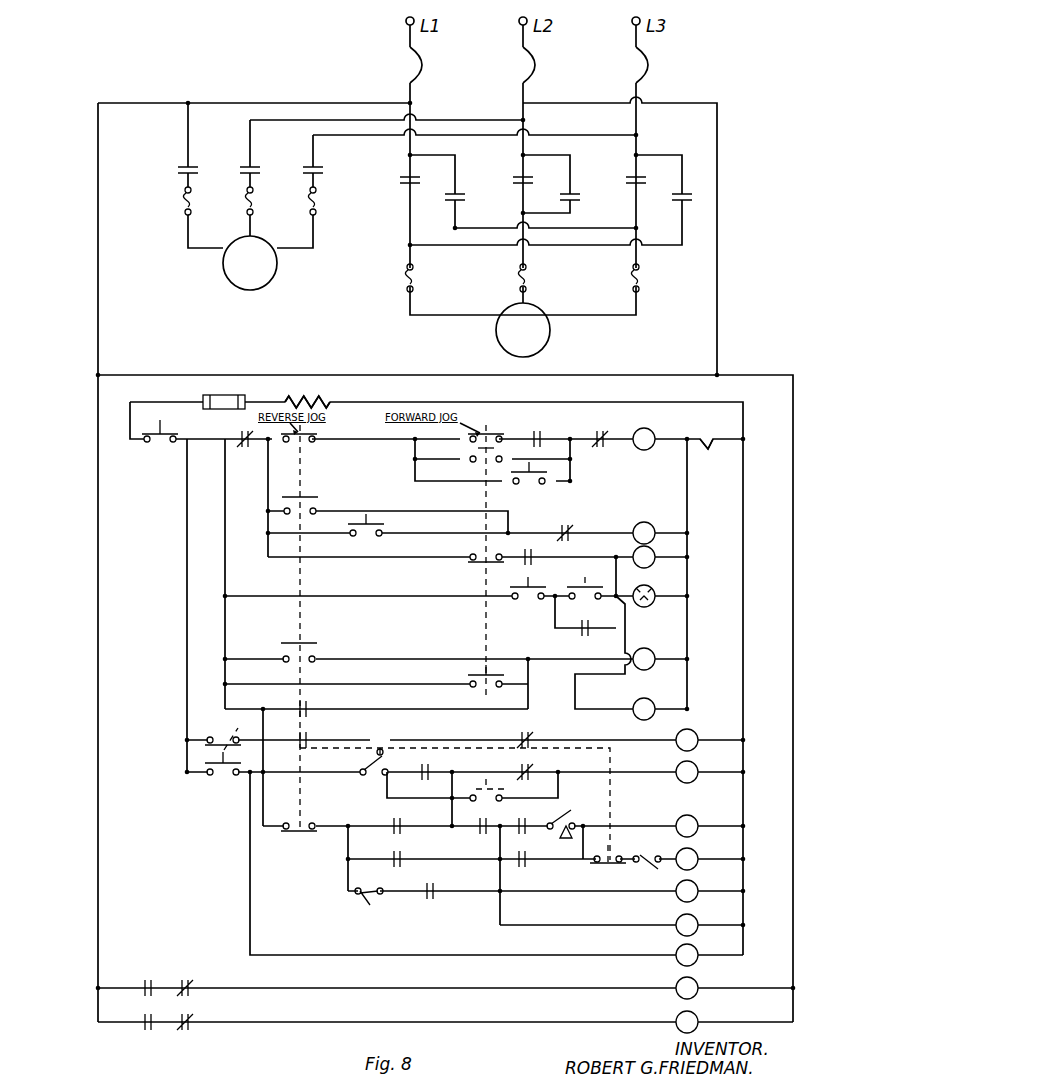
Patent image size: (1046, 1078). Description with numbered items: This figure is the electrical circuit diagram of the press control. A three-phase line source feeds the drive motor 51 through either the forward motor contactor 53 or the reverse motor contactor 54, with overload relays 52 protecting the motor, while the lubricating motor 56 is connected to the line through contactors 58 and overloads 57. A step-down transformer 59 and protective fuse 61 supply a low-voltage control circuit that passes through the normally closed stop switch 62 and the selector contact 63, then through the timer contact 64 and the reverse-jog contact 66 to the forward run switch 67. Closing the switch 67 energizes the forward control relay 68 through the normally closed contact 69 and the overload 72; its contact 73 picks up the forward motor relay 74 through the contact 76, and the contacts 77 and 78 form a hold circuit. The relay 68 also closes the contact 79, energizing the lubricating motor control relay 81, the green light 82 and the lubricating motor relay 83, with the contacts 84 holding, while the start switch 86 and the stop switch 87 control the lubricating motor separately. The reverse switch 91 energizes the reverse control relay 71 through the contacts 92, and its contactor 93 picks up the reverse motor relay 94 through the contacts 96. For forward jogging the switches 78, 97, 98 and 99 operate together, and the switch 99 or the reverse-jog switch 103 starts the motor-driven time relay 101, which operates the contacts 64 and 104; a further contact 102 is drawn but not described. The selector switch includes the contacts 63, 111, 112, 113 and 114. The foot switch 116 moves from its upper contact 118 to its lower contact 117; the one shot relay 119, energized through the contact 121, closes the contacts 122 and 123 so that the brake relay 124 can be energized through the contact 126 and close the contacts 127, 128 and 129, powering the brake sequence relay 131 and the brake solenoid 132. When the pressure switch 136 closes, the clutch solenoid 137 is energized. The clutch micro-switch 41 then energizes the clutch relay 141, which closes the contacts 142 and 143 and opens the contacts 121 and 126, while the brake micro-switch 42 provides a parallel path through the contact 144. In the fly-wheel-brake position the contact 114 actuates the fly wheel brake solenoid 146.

The clutch micro-switch 41 is at (644, 859).
The brake micro-switch 42 is at (376, 870).
The drive motor 51 is at (550, 332).
The overload relays 52 is at (405, 278).
The motor contactor for forward drive 53 is at (400, 182).
The motor contactor for reverse drive 54 is at (462, 190).
The lubricating motor 56 is at (268, 276).
The overloads 57 is at (183, 203).
The contactors 58 is at (175, 174).
The step-down transformer 59 is at (322, 377).
The protective fuse 61 is at (230, 392).
The stop switch 62 is at (158, 444).
The contact 63 is at (212, 738).
The normally closed contact 64 is at (255, 448).
The normally closed contact of the reverse jog switch 66 is at (312, 444).
The forward run switch 67 is at (530, 484).
The forward control relay 68 is at (648, 437).
The normally closed contact 69 is at (603, 436).
The control relay for rearward motion 71 is at (654, 512).
The overload 72 is at (708, 448).
The contact 73 is at (160, 968).
The motor relay for forward motion 74 is at (692, 988).
The normally closed contact 76 is at (185, 980).
The normally open contacts 77 is at (543, 438).
The normally closed contacts of the forward jog switch 78 is at (492, 436).
The normally open contact 79 is at (528, 564).
The lubricating motor control relay 81 is at (647, 558).
The green light 82 is at (648, 592).
The lubricating motor relay 83 is at (648, 704).
The normally open contacts 84 is at (582, 634).
The start switch 86 is at (587, 588).
The stop switch 87 is at (516, 602).
The reverse switch 91 is at (360, 535).
The normally closed contacts 92 is at (565, 532).
The contactor 93 is at (148, 1030).
The motor relay for reverse drive 94 is at (692, 1021).
The normally closed contacts 96 is at (186, 1030).
The normally open switch 97 is at (478, 460).
The normally closed switch 98 is at (478, 562).
The switch 99 is at (482, 686).
The time relay 101 is at (654, 652).
The push button 102 is at (312, 500).
The normally open switch 103 is at (308, 642).
The contact 104 is at (306, 704).
The contact 111 is at (306, 824).
The contact 112 is at (608, 859).
The contact 113 is at (486, 789).
The contact 114 is at (220, 774).
The foot switch 116 is at (372, 776).
The lower contact 117 is at (387, 772).
The upper contact 118 is at (380, 752).
The one shot relay 119 is at (692, 736).
The normally closed contact 121 is at (528, 737).
The normally open contact 122 is at (306, 730).
The normally open contact 123 is at (427, 768).
The brake relay 124 is at (690, 770).
The normally closed contact 126 is at (529, 770).
The normally open contact 127 is at (396, 824).
The normally open contact 128 is at (482, 824).
The normally open contact 129 is at (521, 824).
The brake sequence relay 131 is at (690, 888).
The brake solenoid 132 is at (690, 921).
The pressure switch 136 is at (575, 822).
The clutch solenoid 137 is at (692, 820).
The clutch relay 141 is at (690, 856).
The normally open contact 142 is at (396, 857).
The normally open contact 143 is at (506, 859).
The normally open contact 144 is at (431, 889).
The fly wheel brake solenoid 146 is at (690, 954).